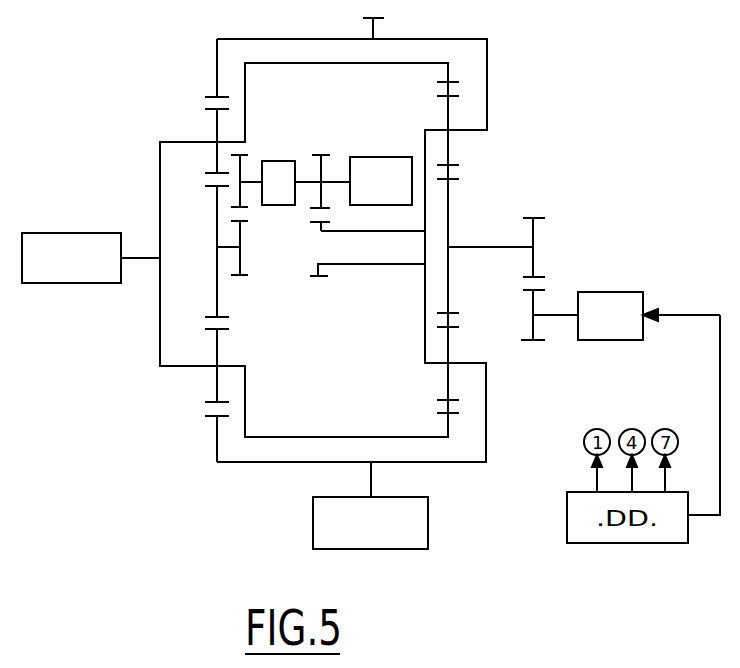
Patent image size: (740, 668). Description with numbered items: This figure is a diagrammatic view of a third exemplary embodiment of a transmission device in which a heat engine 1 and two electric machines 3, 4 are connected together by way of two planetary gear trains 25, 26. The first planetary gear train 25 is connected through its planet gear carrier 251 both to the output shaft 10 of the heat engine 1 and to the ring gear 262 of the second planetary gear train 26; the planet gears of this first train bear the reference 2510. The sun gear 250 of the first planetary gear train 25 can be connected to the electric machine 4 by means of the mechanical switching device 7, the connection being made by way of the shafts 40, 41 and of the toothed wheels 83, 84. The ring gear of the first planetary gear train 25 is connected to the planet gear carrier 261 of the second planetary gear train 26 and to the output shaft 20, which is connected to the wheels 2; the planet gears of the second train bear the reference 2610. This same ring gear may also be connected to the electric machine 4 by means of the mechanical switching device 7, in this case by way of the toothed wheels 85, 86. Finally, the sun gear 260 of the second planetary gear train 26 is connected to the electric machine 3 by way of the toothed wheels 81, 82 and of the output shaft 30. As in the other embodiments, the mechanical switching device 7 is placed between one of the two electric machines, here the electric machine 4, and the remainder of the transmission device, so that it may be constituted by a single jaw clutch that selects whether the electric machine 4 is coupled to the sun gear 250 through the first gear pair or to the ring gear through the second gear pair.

The heat engine 1 is at (55, 265).
The output shaft 10 is at (143, 258).
The wheels 2 is at (367, 527).
The output shaft 20 is at (373, 478).
The first planetary gear train 25 is at (187, 98).
The sun gear 250 is at (213, 203).
The planet gears 2510 is at (213, 378).
The planet gear carrier 251 is at (248, 389).
The second planetary gear train 26 is at (490, 172).
The sun gear 260 is at (450, 209).
The planet gears 2610 is at (450, 342).
The planet gear carrier 261 is at (487, 420).
The ring gear 262 is at (446, 430).
The electric machine 3 is at (613, 325).
The output shaft 30 is at (560, 313).
The electric machine 4 is at (378, 171).
The shaft 40 is at (346, 180).
The shaft 41 is at (250, 186).
The mechanical switching device 7 is at (287, 198).
The toothed wheel 81 is at (545, 257).
The toothed wheel 82 is at (545, 332).
The toothed wheel 83 is at (245, 268).
The toothed wheel 84 is at (247, 163).
The toothed wheel 85 is at (318, 228).
The toothed wheel 86 is at (315, 165).